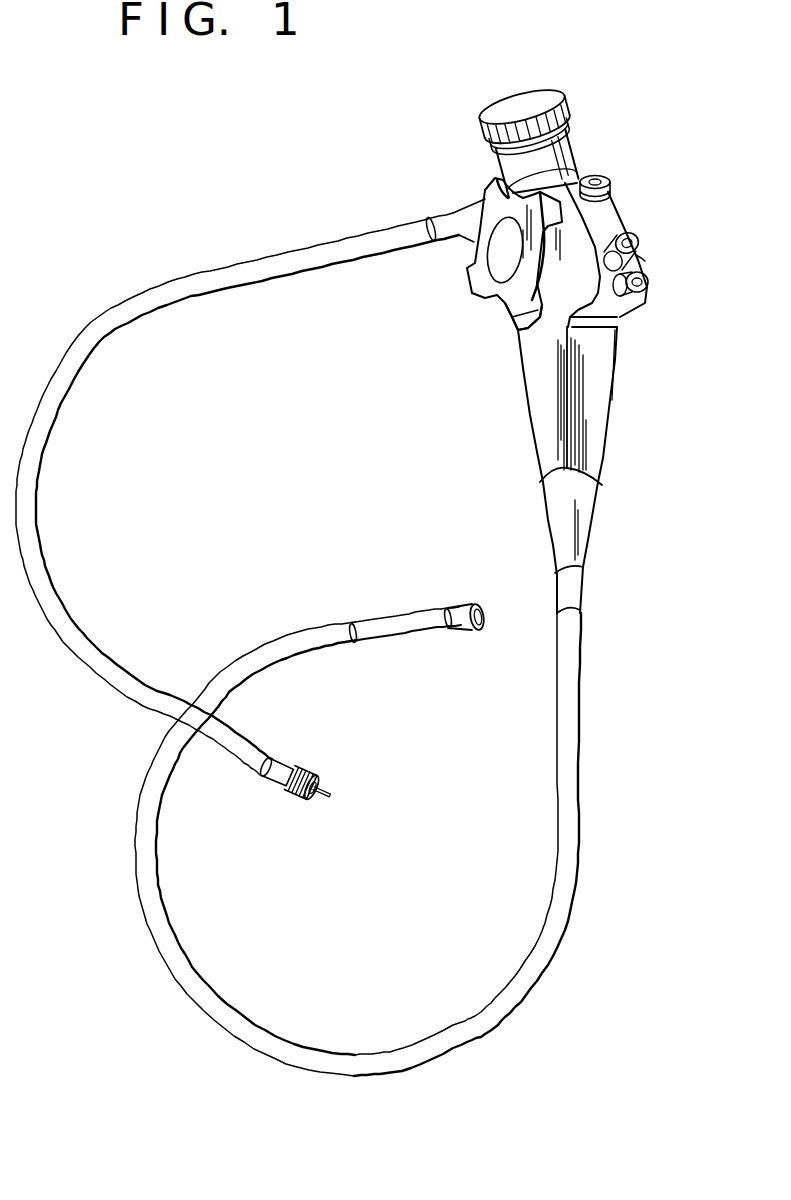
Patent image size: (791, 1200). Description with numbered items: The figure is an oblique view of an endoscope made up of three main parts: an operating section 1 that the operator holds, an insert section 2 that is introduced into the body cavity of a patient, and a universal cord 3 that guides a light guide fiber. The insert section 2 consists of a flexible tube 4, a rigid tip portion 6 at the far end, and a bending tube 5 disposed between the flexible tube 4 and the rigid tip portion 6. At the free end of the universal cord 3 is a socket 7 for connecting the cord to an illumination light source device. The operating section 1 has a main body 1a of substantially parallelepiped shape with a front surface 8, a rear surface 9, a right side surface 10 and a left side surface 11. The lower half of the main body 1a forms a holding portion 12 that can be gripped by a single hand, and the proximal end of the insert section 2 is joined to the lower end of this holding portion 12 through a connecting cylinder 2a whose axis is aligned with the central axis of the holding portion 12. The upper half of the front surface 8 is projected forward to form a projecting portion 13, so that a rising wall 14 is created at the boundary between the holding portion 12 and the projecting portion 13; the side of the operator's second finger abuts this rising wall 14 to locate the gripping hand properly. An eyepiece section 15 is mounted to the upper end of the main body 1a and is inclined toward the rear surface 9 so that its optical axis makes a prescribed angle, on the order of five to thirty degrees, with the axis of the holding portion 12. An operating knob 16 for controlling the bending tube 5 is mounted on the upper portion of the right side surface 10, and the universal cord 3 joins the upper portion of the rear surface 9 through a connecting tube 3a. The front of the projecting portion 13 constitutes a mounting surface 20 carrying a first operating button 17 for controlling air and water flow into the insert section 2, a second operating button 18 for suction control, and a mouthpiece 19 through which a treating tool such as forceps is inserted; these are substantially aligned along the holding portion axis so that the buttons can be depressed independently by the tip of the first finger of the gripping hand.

The operating section 1 is at (513, 389).
The main body 1a is at (523, 343).
The insert section 2 is at (191, 1004).
The connecting cylinder 2a is at (560, 538).
The universal cord 3 is at (99, 360).
The connecting tube 3a is at (457, 222).
The flexible tube 4 is at (523, 1000).
The bending tube 5 is at (404, 622).
The rigid tip portion 6 is at (457, 628).
The socket 7 is at (290, 790).
The front surface 8 is at (612, 368).
The rear surface 9 is at (537, 458).
The right side surface 10 is at (543, 423).
The left side surface 11 is at (612, 455).
The holding portion 12 is at (588, 402).
The projecting portion 13 is at (513, 312).
The rising wall 14 is at (620, 317).
The eyepiece section 15 is at (564, 146).
The operating knob 16 is at (476, 274).
The first operating button 17 is at (646, 284).
The second operating button 18 is at (634, 240).
The mouthpiece 19 is at (603, 180).
The mounting surface 20 is at (644, 262).